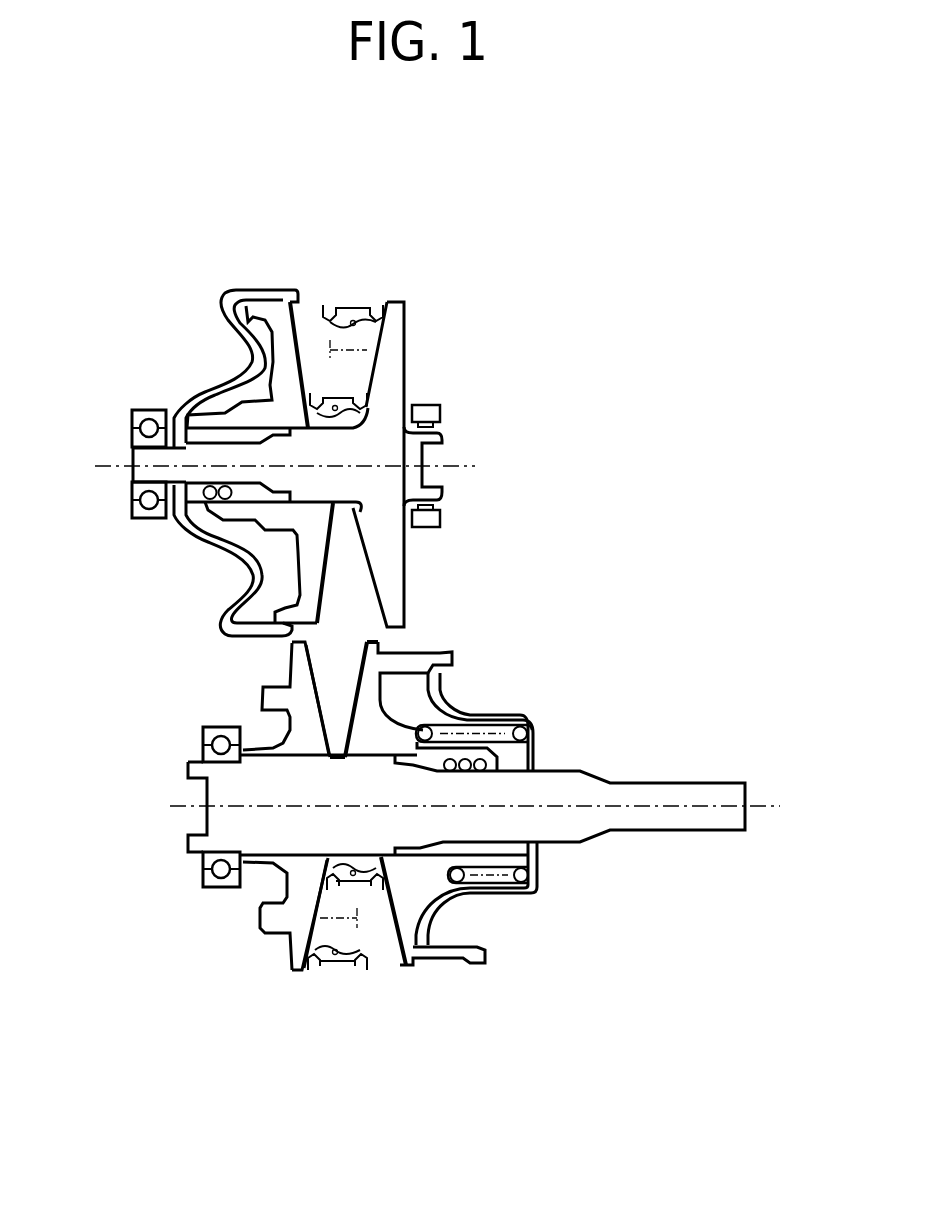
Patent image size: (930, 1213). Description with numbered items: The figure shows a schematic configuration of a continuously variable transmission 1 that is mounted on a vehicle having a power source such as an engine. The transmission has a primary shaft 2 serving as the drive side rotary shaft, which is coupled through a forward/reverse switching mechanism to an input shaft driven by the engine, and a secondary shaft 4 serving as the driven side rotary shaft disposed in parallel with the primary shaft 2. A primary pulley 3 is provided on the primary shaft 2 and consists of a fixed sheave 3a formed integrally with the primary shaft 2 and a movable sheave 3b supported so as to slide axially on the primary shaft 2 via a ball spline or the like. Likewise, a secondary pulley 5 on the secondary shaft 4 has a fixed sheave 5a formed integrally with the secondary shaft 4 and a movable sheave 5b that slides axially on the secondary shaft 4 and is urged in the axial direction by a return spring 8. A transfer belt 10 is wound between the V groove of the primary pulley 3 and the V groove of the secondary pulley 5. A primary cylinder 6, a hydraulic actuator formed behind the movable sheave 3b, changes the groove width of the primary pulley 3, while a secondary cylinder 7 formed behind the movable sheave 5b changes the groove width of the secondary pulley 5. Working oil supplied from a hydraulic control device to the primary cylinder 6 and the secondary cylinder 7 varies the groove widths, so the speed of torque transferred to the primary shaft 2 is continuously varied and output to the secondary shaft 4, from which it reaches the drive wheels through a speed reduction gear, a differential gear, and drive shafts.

The continuously variable transmission 1 is at (530, 558).
The primary shaft 2 is at (124, 456).
The primary pulley 3 is at (355, 400).
The fixed sheave 3a is at (391, 308).
The movable sheave 3b is at (312, 420).
The secondary shaft 4 is at (580, 792).
The secondary pulley 5 is at (337, 872).
The fixed sheave 5a is at (291, 972).
The movable sheave 5b is at (368, 852).
The primary cylinder 6 is at (231, 374).
The secondary cylinder 7 is at (458, 907).
The return spring 8 is at (534, 726).
The transfer belt 10 is at (368, 406).